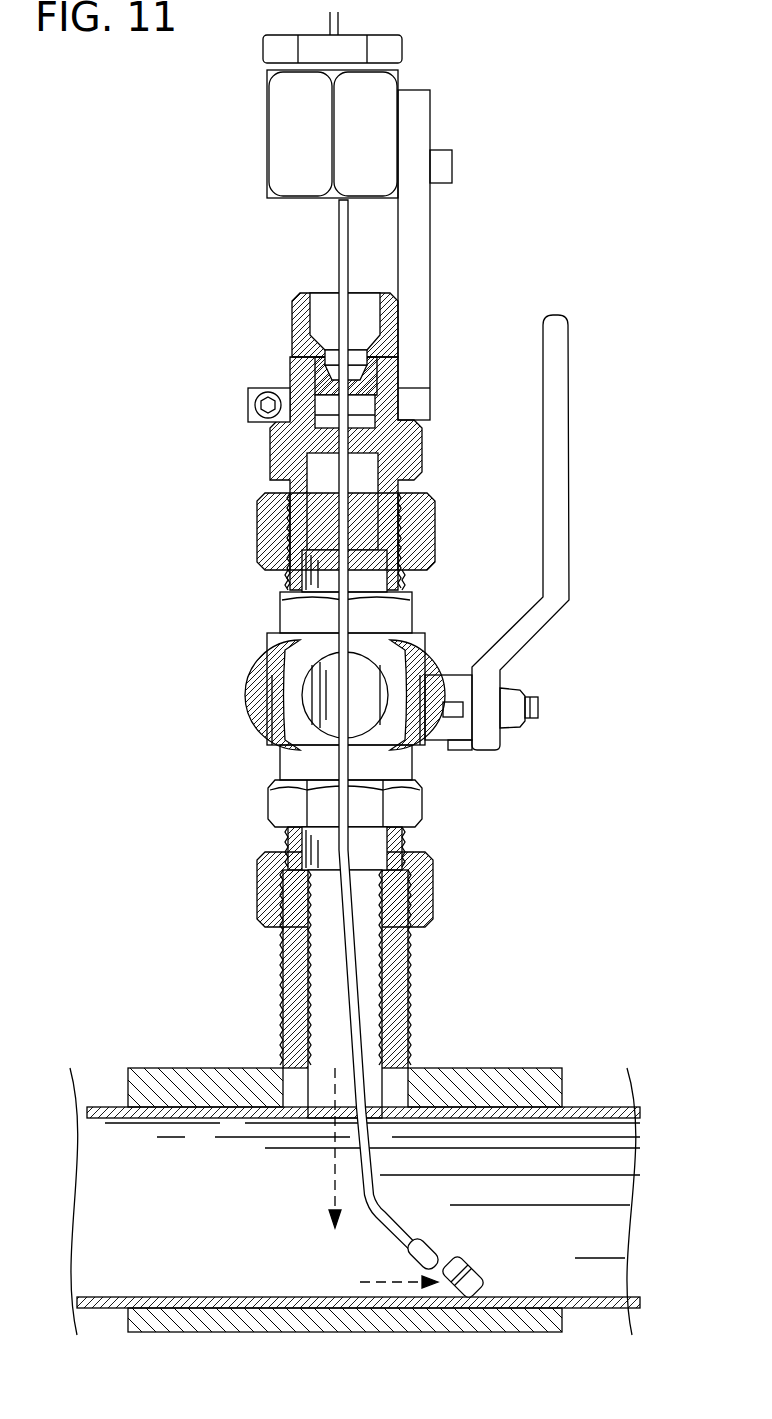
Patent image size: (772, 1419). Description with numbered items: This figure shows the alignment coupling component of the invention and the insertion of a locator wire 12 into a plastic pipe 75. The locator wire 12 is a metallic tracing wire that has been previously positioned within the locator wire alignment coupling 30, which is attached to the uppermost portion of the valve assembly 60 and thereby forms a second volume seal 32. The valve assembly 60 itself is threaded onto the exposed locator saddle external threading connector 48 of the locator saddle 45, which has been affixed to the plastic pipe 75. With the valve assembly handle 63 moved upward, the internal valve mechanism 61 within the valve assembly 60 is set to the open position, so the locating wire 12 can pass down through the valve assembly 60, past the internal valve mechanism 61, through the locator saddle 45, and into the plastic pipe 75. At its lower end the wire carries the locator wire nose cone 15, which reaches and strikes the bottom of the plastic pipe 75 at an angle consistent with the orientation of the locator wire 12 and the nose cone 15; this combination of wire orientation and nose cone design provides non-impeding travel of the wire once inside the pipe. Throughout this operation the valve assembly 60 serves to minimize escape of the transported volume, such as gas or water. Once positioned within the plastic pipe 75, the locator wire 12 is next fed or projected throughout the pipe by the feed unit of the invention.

The locator wire 12 is at (340, 280).
The locator wire nose cone 15 is at (458, 1258).
The locator wire alignment coupling 30 is at (205, 512).
The second volume seal 32 is at (292, 358).
The locator saddle 45 is at (508, 922).
The locator saddle external threading connector 48 is at (415, 500).
The valve assembly 60 is at (434, 580).
The internal valve mechanism 61 is at (367, 658).
The valve assembly handle 63 is at (562, 402).
The plastic pipe 75 is at (598, 1232).